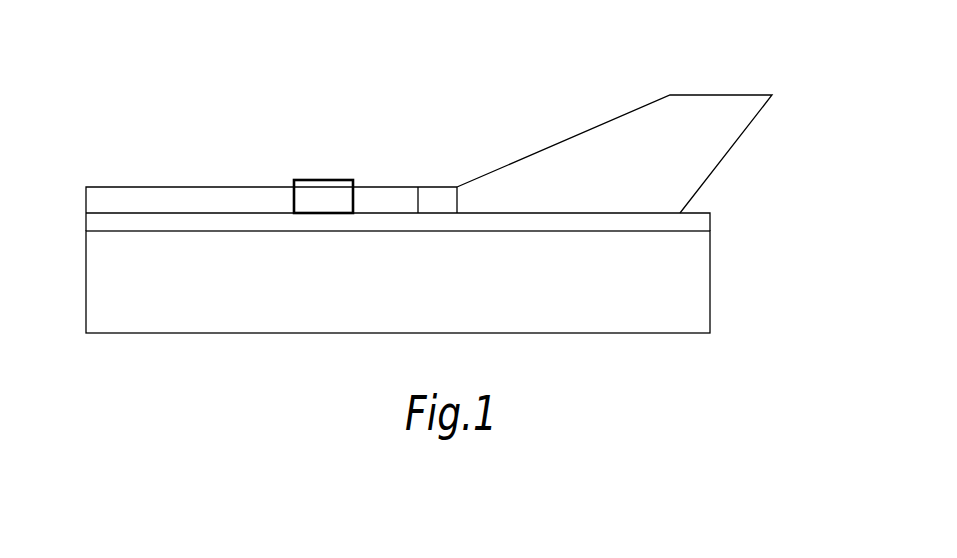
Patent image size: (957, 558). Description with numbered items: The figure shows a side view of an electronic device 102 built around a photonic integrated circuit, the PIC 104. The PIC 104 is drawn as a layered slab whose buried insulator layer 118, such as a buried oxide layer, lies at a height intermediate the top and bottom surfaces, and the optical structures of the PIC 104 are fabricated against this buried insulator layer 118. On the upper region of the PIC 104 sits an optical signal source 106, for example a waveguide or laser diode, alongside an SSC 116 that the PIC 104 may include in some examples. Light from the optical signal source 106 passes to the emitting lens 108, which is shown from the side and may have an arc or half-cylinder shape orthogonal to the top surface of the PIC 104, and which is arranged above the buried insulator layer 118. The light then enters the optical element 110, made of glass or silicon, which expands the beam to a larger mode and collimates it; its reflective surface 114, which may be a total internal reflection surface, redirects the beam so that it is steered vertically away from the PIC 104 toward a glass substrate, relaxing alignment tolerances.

The electronic device 102 is at (137, 43).
The PIC 104 is at (86, 278).
The optical signal source 106 is at (323, 179).
The emitting lens 108 is at (437, 197).
The optical element 110 is at (625, 142).
The reflective surface 114 is at (797, 177).
The SSC 116 is at (388, 190).
The buried insulator layer 118 is at (86, 222).